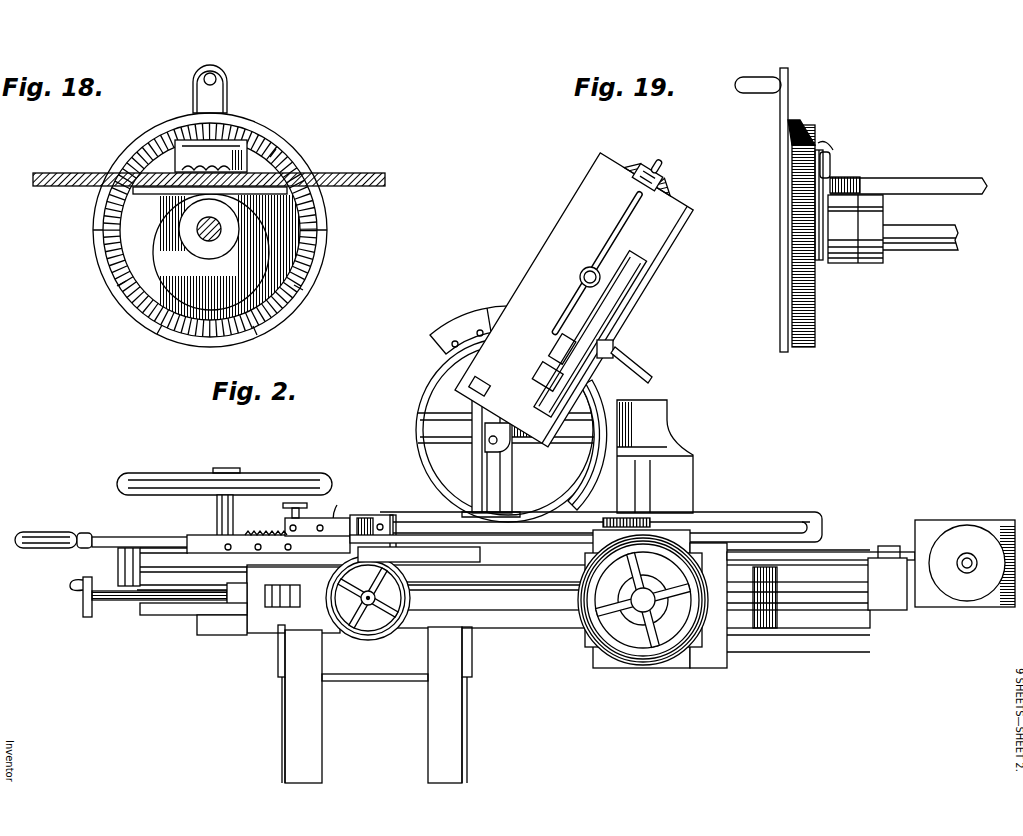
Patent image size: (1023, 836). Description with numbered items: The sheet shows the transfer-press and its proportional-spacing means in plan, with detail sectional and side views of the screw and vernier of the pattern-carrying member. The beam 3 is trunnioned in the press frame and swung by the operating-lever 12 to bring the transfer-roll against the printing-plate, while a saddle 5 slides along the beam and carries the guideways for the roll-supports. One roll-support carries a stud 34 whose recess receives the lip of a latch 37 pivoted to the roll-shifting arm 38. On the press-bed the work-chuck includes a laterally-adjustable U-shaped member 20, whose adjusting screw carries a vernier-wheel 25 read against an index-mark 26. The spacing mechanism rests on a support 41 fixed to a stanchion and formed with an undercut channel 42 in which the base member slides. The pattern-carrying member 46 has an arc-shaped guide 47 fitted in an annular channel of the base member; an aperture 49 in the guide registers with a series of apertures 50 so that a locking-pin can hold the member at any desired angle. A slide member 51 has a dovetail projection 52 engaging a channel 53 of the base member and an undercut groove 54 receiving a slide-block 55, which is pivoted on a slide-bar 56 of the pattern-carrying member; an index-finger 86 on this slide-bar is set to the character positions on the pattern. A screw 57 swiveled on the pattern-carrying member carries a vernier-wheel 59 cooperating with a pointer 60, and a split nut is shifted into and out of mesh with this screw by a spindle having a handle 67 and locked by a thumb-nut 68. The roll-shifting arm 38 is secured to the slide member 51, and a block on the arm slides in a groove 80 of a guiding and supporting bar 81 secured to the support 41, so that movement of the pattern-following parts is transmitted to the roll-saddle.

In FIG. 2, the beam 3 is at (534, 620).
In FIG. 19, the saddle 5 is at (787, 147).
In FIG. 2, the saddle 5 is at (302, 632).
In FIG. 2, the operating-lever 12 is at (72, 533).
In FIG. 2, the laterally-adjustable U-shaped member 20 is at (443, 727).
In FIG. 2, the vernier-wheel 25 is at (306, 517).
In FIG. 2, the index-mark 26 is at (282, 524).
In FIG. 2, the stud 34 is at (338, 508).
In FIG. 2, the latch 37 is at (372, 516).
In FIG. 2, the roll-shifting arm 38 is at (626, 518).
In FIG. 2, the support 41 is at (692, 483).
In FIG. 2, the undercut channel 42 is at (667, 421).
In FIG. 18, the pattern-carrying member 46 is at (362, 174).
In FIG. 19, the pattern-carrying member 46 is at (924, 192).
In FIG. 2, the arc-shaped guide 47 is at (598, 403).
In FIG. 2, the aperture 49 is at (481, 329).
In FIG. 2, the apertures 50 is at (453, 340).
In FIG. 2, the slide member 51 is at (507, 483).
In FIG. 2, the dovetail projection 52 is at (470, 430).
In FIG. 2, the channel 53 is at (440, 430).
In FIG. 2, the undercut groove 54 is at (482, 481).
In FIG. 2, the slide-block 55 is at (506, 448).
In FIG. 2, the slide-bar 56 is at (494, 434).
In FIG. 18, the screw 57 is at (200, 231).
In FIG. 19, the screw 57 is at (926, 248).
In FIG. 18, the vernier-wheel 59 is at (235, 118).
In FIG. 2, the vernier-wheel 59 is at (645, 170).
In FIG. 18, the pointer 60 is at (262, 141).
In FIG. 19, the pointer 60 is at (818, 150).
In FIG. 2, the pointer 60 is at (663, 183).
In FIG. 2, the handle 67 is at (584, 279).
In FIG. 2, the thumb-nut 68 is at (582, 270).
In FIG. 2, the groove 80 is at (752, 521).
In FIG. 2, the guiding and supporting bar 81 is at (786, 530).
In FIG. 2, the index-finger 86 is at (610, 342).